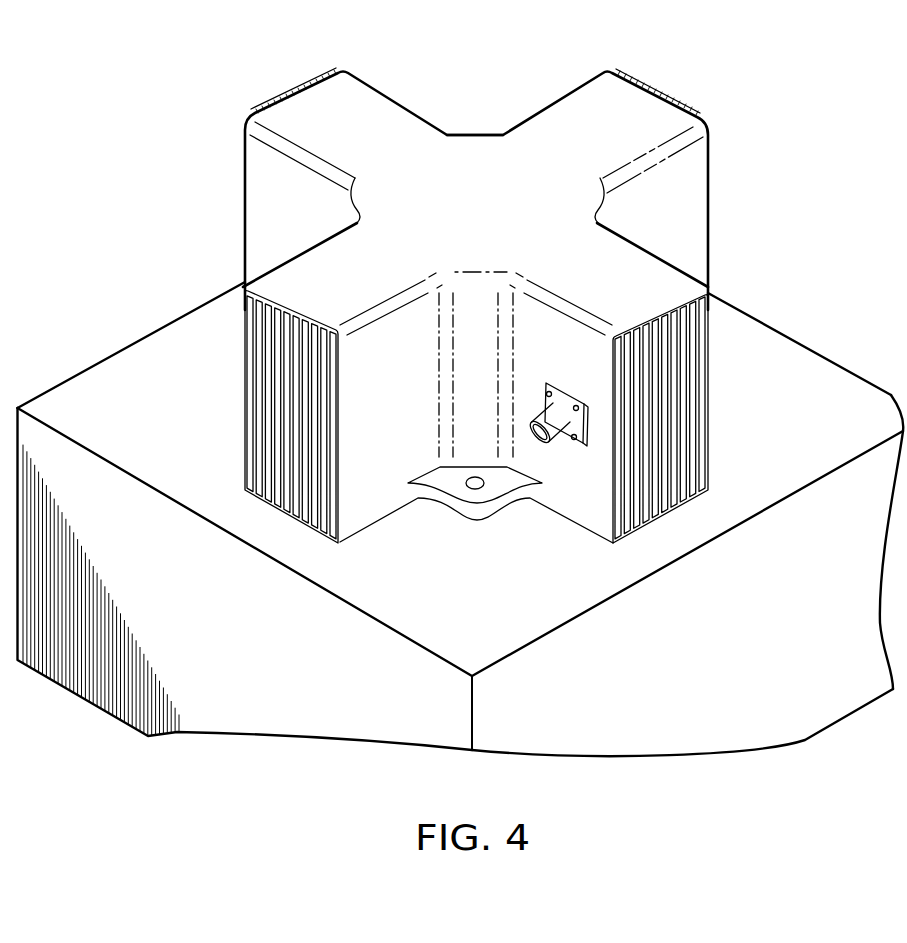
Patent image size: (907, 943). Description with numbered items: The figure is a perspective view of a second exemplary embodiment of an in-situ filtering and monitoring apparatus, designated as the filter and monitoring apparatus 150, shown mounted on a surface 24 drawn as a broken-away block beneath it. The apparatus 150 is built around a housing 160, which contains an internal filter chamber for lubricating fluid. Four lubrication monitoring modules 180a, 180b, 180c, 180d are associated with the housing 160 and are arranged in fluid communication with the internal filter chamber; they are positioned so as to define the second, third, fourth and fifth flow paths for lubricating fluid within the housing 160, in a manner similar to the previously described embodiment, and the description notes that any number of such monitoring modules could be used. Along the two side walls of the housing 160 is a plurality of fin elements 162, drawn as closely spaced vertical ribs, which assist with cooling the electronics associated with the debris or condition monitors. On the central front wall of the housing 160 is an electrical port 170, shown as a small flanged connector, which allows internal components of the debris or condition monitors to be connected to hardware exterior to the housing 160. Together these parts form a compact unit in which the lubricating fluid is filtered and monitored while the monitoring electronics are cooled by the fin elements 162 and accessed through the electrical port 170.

The panel / mounting surface 24 is at (825, 384).
The filter and monitoring apparatus 150 is at (757, 102).
The housing 160 is at (460, 127).
The fin elements 162 is at (676, 399).
The electrical ports 170 is at (553, 423).
The lubrication monitoring module 180a is at (600, 127).
The lubrication monitoring module 180b is at (352, 125).
The lubrication monitoring module 180c is at (308, 283).
The lubrication monitoring module 180d is at (648, 283).